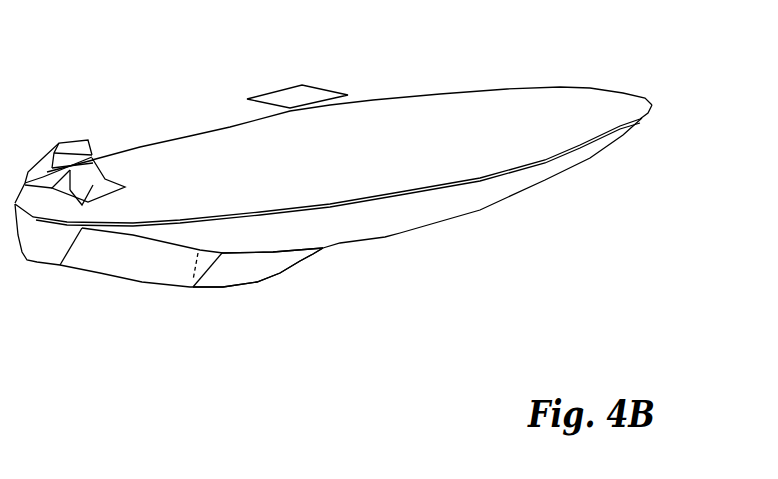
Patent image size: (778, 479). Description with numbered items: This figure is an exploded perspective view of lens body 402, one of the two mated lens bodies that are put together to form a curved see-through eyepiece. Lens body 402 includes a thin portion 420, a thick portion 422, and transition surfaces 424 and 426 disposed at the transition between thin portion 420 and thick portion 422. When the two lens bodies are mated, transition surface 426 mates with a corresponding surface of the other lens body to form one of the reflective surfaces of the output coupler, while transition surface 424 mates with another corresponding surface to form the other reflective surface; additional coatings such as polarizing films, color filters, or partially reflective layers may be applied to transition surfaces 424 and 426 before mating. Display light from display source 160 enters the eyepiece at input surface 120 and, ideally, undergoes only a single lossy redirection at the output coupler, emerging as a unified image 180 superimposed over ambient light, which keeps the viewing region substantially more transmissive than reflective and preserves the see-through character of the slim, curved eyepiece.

The lens body 402 is at (507, 41).
The thin portion 420 is at (368, 228).
The thick portion 422 is at (55, 248).
The transition surface 424 is at (130, 268).
The transition surface 426 is at (272, 270).
The display source 160 is at (73, 143).
The input surface 120 is at (100, 164).
The unified image 180 is at (313, 97).